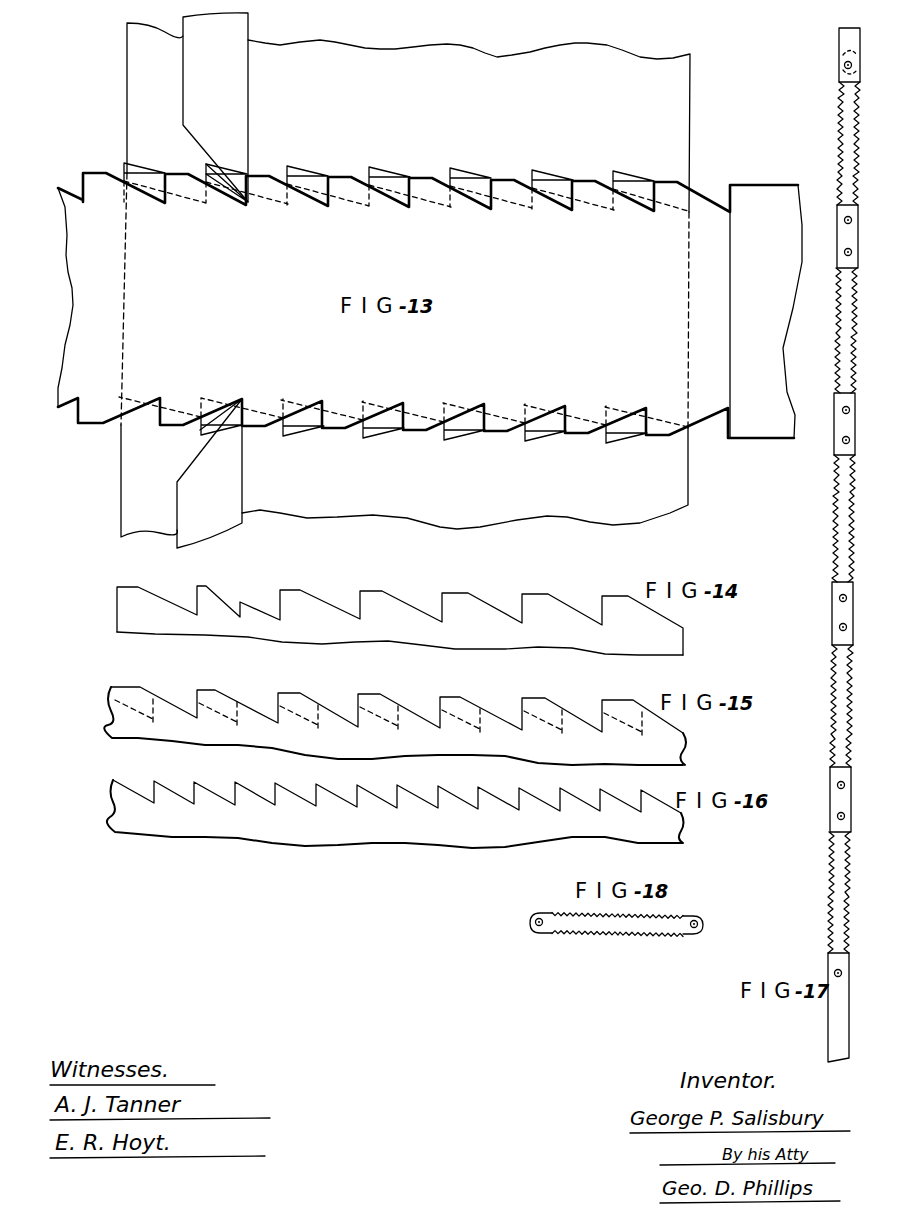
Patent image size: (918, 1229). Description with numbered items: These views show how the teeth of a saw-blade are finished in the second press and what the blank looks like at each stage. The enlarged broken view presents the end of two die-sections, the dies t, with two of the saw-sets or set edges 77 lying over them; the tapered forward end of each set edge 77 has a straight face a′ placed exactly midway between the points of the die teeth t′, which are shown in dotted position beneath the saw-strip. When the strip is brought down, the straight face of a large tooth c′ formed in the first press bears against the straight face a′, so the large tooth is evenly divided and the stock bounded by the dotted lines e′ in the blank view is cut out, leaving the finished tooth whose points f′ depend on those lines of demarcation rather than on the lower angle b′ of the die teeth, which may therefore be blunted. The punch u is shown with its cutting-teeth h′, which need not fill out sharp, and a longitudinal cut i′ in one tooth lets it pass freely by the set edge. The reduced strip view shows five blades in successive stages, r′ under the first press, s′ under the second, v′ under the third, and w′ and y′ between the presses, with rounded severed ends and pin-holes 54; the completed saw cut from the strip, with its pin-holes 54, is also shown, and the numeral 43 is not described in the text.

In FIG. 13, the set edge 77 is at (212, 280).
In FIG. 17, the pin-hole 54 is at (844, 67).
In FIG. 18, the pin-hole 54 is at (530, 931).
In FIG. 13, the saw blade bar 43 is at (614, 303).
In FIG. 15, the saw blade bar 43 is at (111, 740).
In FIG. 16, the saw blade bar 43 is at (113, 782).
In FIG. 17, the saw blade bar 43 is at (838, 1028).
In FIG. 13, the die t is at (553, 523).
In FIG. 13, the punch u is at (346, 300).
In FIG. 14, the punch u is at (400, 620).
In FIG. 13, the straight face a′ is at (248, 126).
In FIG. 13, the lower angle b′ is at (126, 163).
In FIG. 13, the large tooth c′ is at (100, 173).
In FIG. 15, the large tooth c′ is at (131, 682).
In FIG. 15, the dotted lines e′ is at (153, 722).
In FIG. 16, the points f′ is at (317, 785).
In FIG. 13, the cutting-teeth h′ is at (141, 180).
In FIG. 14, the cutting-teeth h′ is at (375, 604).
In FIG. 13, the longitudinal cut i′ is at (205, 160).
In FIG. 14, the longitudinal cut i′ is at (238, 602).
In FIG. 13, the teeth of the dies t′ is at (206, 203).
In FIG. 17, the saw-blade section v′ is at (843, 131).
In FIG. 17, the saw-blade section y′ is at (842, 325).
In FIG. 17, the saw-blade section s′ is at (840, 524).
In FIG. 17, the saw-blade section w′ is at (838, 690).
In FIG. 17, the saw-blade section r′ is at (836, 889).